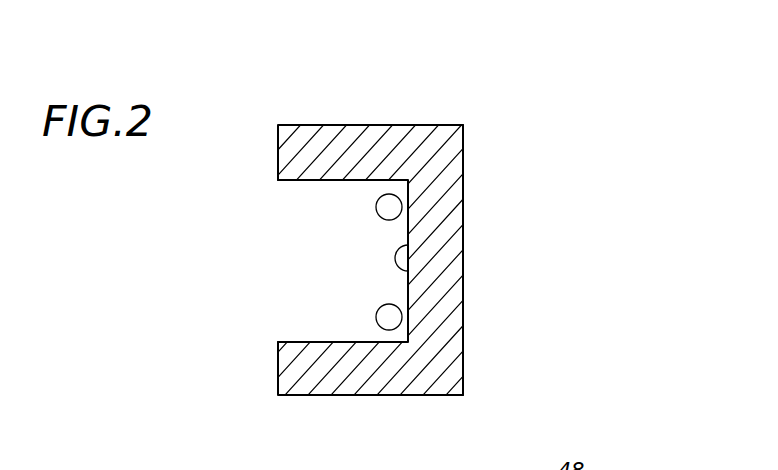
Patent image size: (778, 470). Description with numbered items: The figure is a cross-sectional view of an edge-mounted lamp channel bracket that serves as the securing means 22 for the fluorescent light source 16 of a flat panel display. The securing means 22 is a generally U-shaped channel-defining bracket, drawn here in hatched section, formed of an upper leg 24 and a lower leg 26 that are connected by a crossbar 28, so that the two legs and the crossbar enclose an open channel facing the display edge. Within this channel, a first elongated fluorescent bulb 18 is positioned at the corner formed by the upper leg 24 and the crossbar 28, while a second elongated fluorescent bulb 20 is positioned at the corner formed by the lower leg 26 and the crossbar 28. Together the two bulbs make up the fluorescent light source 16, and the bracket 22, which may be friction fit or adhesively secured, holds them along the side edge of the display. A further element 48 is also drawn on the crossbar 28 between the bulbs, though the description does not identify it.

The fluorescent light source 16 is at (273, 193).
The first elongated fluorescent bulb 18 is at (376, 207).
The second elongated fluorescent bulb 20 is at (376, 317).
The securing means 22 is at (551, 165).
The upper leg 24 is at (363, 124).
The lower leg 26 is at (372, 396).
The crossbar 28 is at (463, 243).
The third sensor element 48 is at (395, 260).